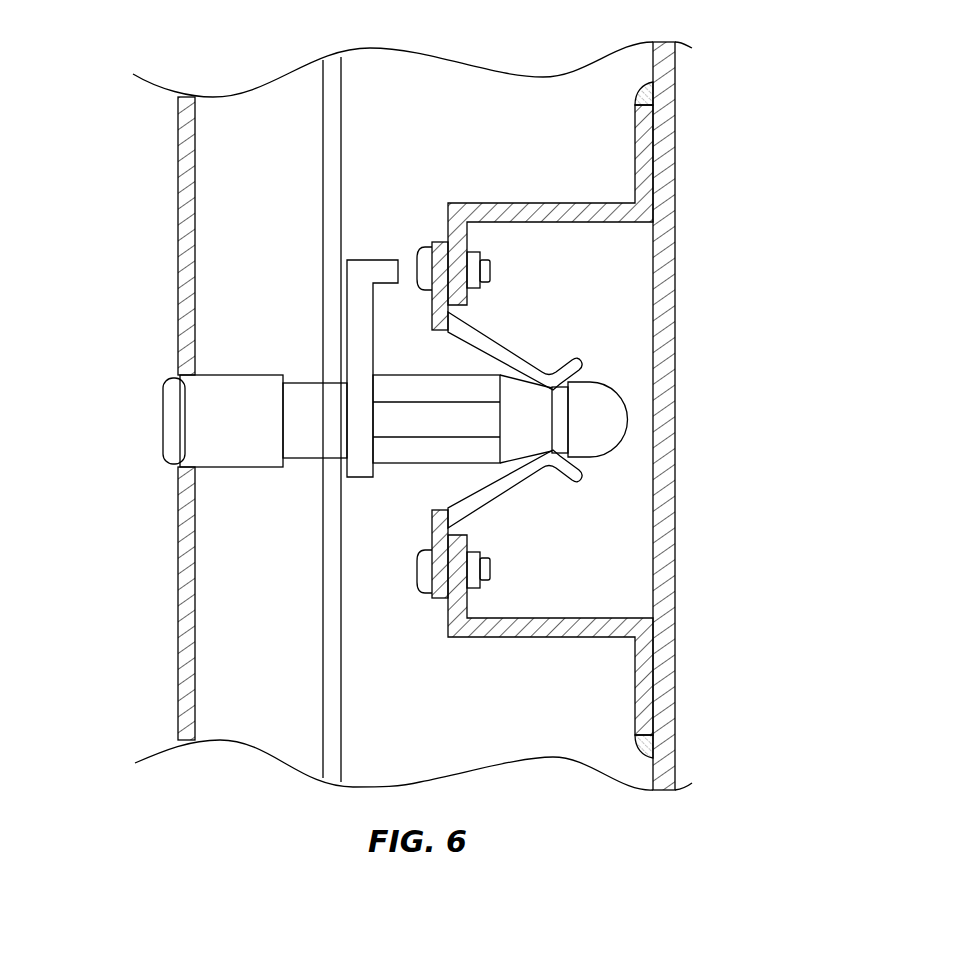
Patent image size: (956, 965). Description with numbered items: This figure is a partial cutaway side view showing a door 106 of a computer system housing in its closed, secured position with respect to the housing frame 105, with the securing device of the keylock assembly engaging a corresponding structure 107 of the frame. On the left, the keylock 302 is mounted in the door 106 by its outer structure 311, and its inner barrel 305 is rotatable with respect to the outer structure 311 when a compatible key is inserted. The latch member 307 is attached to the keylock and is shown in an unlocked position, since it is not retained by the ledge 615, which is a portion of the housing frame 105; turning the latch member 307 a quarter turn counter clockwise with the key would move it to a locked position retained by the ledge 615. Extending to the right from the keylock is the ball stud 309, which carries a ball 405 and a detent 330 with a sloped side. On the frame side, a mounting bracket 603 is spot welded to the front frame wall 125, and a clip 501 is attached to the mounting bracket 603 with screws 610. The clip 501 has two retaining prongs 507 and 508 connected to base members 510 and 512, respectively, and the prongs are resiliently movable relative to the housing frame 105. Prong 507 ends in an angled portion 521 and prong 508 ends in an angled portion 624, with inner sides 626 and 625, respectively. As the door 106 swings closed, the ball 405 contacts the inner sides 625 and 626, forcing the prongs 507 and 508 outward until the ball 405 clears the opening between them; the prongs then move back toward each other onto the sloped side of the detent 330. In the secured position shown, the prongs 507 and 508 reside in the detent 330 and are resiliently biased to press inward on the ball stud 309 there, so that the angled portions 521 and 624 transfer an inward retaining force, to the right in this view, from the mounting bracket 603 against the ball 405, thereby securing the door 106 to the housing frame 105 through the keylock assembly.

The housing frame structure 105 is at (690, 74).
The door 106 is at (175, 278).
The corresponding structure 107 is at (521, 95).
The front panel 125 is at (675, 283).
The keylock 302 is at (239, 334).
The inner barrel 305 is at (335, 435).
The latch member 307 is at (363, 260).
The ball stud 309 is at (454, 435).
The outer structure 311 is at (250, 435).
The detent 330 is at (563, 402).
The ball 405 is at (582, 448).
The clip 501 is at (493, 307).
The retaining prong 507 is at (523, 472).
The retaining prong 508 is at (500, 357).
The base member 510 is at (443, 600).
The base member 512 is at (438, 237).
The angled portion 521 is at (494, 508).
The mounting bracket 603 is at (572, 637).
The screws 610 is at (425, 248).
The ledge 615 is at (342, 673).
The angled portion 624 is at (512, 360).
The inner side 625 is at (495, 348).
The inner side 626 is at (466, 493).